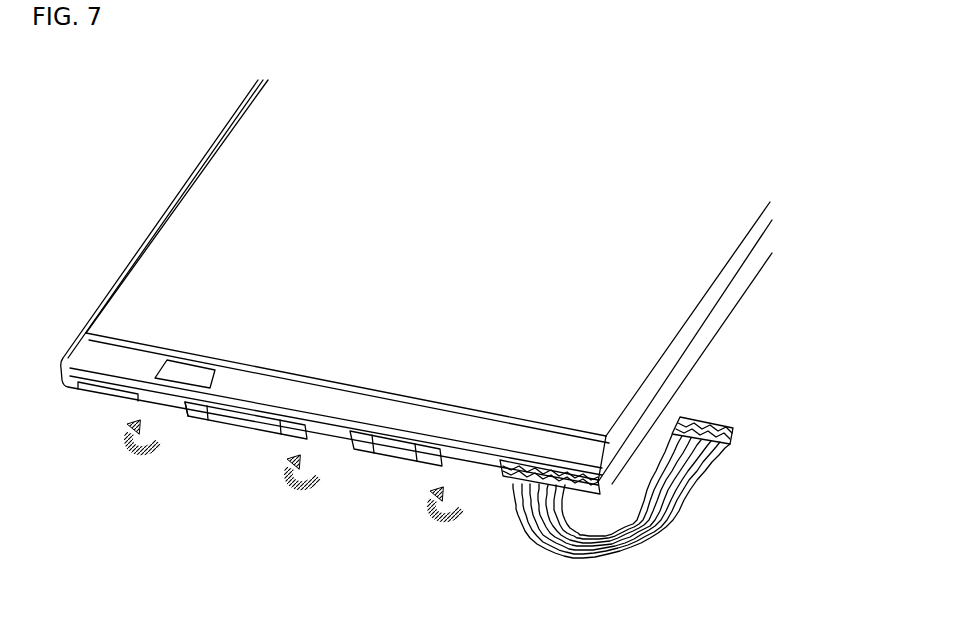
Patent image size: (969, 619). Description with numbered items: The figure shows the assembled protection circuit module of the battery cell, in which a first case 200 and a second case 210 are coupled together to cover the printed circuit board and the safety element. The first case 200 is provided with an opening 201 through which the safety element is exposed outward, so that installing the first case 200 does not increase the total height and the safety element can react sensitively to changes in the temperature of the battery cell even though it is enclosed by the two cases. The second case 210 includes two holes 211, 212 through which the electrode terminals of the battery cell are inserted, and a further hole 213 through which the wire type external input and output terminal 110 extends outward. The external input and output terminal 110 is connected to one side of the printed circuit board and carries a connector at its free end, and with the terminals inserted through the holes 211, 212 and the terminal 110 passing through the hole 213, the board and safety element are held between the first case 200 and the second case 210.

The first case 200 is at (354, 392).
The opening 201 is at (205, 367).
The second case 210 is at (94, 411).
The hole 211 is at (222, 418).
The hole 212 is at (360, 448).
The hole 213 is at (493, 476).
The wire type external input and output terminal 110 is at (685, 497).